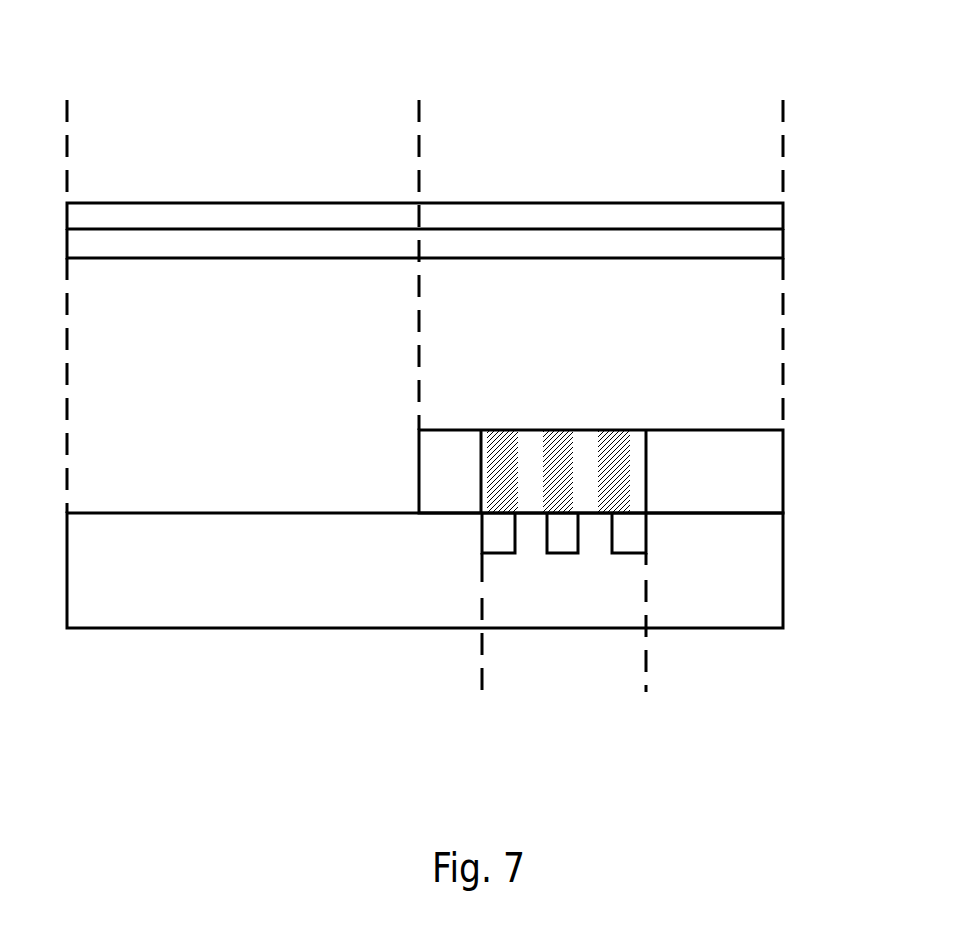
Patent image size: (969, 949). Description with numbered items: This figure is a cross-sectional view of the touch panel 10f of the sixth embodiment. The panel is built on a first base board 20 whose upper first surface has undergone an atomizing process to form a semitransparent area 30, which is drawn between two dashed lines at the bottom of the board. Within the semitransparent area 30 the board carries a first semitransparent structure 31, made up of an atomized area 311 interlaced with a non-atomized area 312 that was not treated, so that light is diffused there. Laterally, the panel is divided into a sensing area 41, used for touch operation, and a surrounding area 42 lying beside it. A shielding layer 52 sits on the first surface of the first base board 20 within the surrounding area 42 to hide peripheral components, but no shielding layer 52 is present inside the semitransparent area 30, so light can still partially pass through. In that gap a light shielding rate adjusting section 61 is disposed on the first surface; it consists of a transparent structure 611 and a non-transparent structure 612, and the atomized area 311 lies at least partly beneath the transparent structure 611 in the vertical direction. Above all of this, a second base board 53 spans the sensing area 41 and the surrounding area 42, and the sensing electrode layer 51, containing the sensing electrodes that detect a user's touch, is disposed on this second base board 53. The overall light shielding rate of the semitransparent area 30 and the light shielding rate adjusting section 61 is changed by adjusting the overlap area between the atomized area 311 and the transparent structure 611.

The touch panel 10f is at (735, 62).
The sensing area 41 is at (406, 118).
The surrounding area 42 is at (770, 118).
The sensing electrode layer 51 is at (258, 203).
The second base board 53 is at (264, 252).
The shielding layer 52 is at (449, 440).
The light shielding rate adjusting section 61 is at (546, 402).
The transparent structure 611 is at (526, 420).
The non-transparent structure 612 is at (549, 424).
The first base board 20 is at (755, 598).
The first semitransparent structure 31 is at (507, 572).
The atomized area 311 is at (533, 540).
The non-atomized area 312 is at (565, 570).
The semitransparent area 30 is at (633, 688).